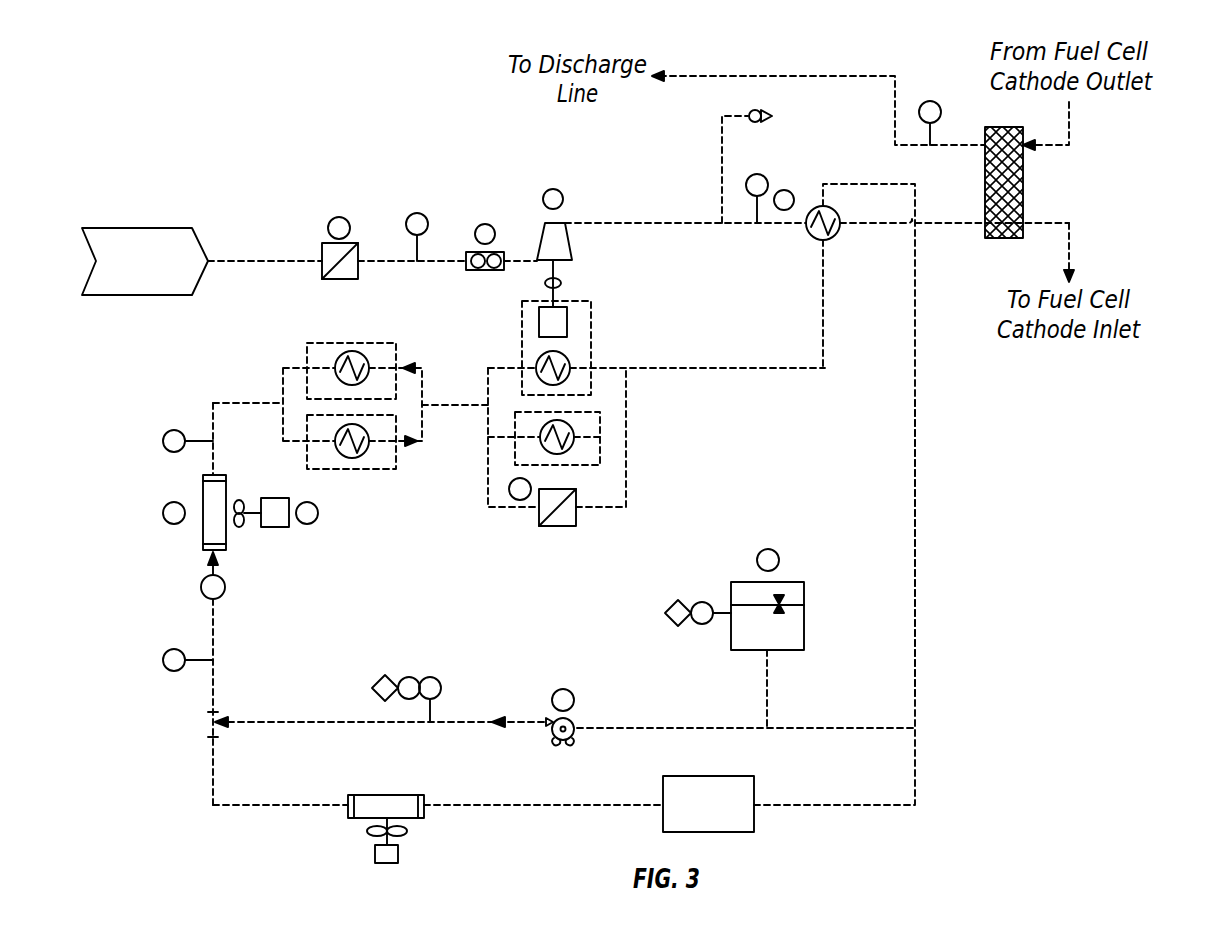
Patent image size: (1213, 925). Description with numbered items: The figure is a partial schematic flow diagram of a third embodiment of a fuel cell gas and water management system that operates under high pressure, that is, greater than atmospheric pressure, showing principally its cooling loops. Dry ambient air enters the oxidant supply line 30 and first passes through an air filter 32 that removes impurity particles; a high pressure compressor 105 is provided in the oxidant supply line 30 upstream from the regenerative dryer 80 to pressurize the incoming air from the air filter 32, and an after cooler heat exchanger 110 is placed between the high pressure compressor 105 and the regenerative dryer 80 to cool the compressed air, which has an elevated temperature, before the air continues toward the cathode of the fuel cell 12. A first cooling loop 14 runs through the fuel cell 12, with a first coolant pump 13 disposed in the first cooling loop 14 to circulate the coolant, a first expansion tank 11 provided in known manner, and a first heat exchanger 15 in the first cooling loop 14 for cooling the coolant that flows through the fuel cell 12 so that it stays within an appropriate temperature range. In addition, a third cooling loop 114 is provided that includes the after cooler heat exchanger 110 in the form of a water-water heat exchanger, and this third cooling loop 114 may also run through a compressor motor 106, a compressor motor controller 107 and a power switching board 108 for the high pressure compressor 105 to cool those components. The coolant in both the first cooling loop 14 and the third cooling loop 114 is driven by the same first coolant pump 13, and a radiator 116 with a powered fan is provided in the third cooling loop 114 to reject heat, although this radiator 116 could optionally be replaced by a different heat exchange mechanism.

The oxidant supply line 30 is at (236, 261).
The air filter 32 is at (340, 279).
The high pressure compressor 105 is at (548, 222).
The compressor motor 106 is at (567, 325).
The compressor motor controller 107 is at (600, 462).
The power switching board 108 is at (373, 343).
The after cooler heat exchanger 110 is at (833, 238).
The third cooling loop 114 is at (917, 543).
The radiator 116 is at (203, 520).
The first expansion tank 11 is at (804, 615).
The fuel cell 12 is at (705, 776).
The first coolant pump 13 is at (572, 718).
The first cooling loop 14 is at (568, 805).
The first heat exchanger 15 is at (390, 795).
The regenerative dryer 80 is at (1005, 127).